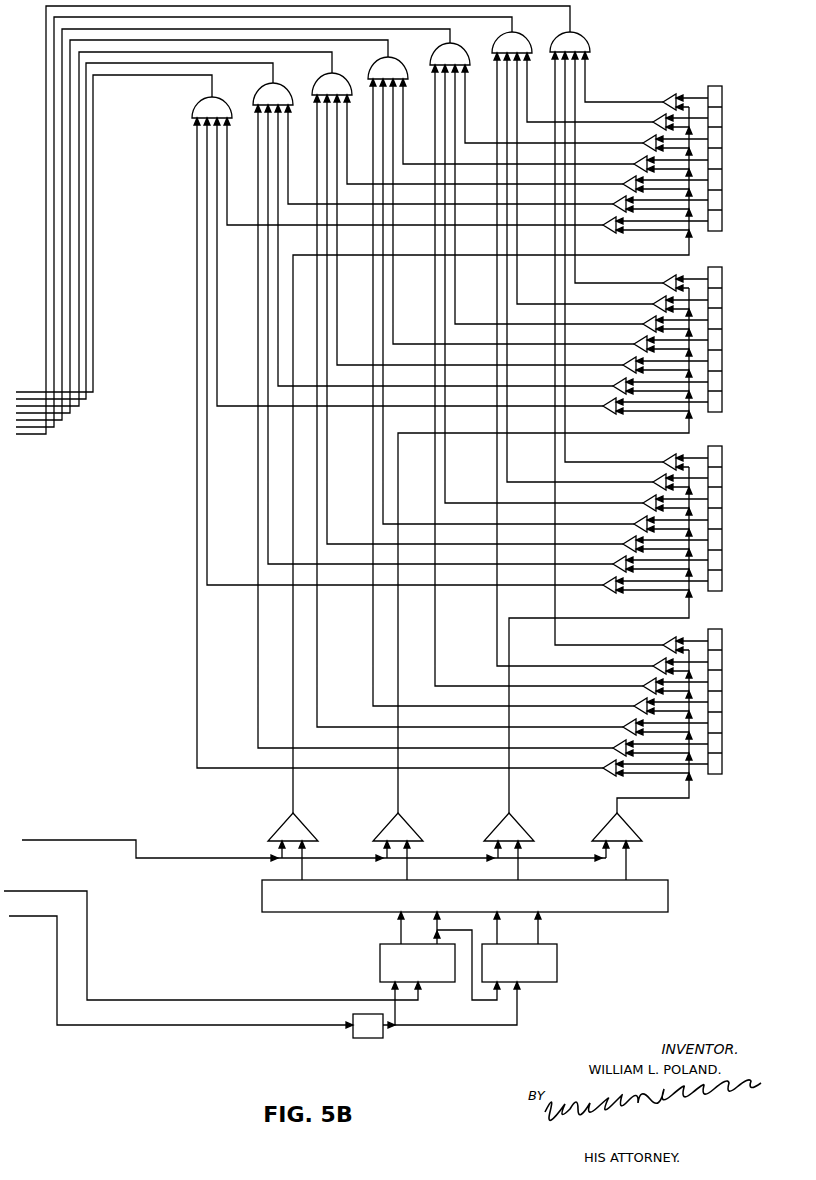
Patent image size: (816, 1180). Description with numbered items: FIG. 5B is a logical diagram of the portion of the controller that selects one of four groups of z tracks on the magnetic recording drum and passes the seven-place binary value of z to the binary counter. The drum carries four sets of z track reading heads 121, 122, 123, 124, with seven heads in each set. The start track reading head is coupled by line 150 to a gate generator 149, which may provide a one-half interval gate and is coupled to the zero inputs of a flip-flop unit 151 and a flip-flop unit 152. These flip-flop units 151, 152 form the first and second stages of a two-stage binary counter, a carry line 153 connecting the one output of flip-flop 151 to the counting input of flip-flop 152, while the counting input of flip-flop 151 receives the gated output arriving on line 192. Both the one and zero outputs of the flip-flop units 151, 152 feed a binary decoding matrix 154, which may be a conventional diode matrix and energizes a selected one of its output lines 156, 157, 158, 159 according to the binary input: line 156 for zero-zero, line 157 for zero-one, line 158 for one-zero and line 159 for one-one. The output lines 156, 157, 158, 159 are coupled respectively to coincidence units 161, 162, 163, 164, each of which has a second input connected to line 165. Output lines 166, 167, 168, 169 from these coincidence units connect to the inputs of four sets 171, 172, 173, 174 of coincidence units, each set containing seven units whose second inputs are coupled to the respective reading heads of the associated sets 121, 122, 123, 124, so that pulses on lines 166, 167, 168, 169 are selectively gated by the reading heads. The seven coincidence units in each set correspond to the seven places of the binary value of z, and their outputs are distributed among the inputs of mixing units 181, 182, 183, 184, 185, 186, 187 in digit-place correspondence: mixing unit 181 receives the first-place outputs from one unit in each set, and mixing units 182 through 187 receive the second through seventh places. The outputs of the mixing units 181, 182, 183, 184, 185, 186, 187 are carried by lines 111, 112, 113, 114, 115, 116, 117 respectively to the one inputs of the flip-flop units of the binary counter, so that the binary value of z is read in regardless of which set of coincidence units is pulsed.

The line 111 is at (93, 125).
The line 112 is at (88, 160).
The line 113 is at (79, 200).
The line 114 is at (70, 225).
The line 115 is at (62, 248).
The line 116 is at (54, 288).
The line 117 is at (46, 322).
The set of z track reading heads 121 is at (722, 106).
The set of z track reading heads 122 is at (722, 280).
The set of z track reading heads 123 is at (722, 458).
The set of z track reading heads 124 is at (722, 641).
The gate generator 149 is at (384, 1037).
The line 150 is at (230, 1026).
The flip-flop unit 151 is at (380, 971).
The flip-flop unit 152 is at (557, 968).
The carry line 153 is at (508, 1001).
The binary decoding matrix 154 is at (583, 913).
The output line 156 is at (306, 868).
The output line 157 is at (410, 868).
The output line 158 is at (521, 868).
The output line 159 is at (628, 871).
The coincidence unit 161 is at (270, 827).
The coincidence unit 162 is at (376, 827).
The coincidence unit 163 is at (487, 827).
The coincidence unit 164 is at (596, 827).
The line 165 is at (240, 859).
The output line 166 is at (294, 808).
The output line 167 is at (399, 806).
The output line 168 is at (510, 806).
The output line 169 is at (642, 801).
The set of coincidence units 171 is at (634, 118).
The set of coincidence units 172 is at (620, 338).
The set of coincidence units 173 is at (611, 517).
The set of coincidence units 174 is at (605, 703).
The mixing unit 181 is at (194, 104).
The mixing unit 182 is at (284, 89).
The mixing unit 183 is at (344, 79).
The mixing unit 184 is at (402, 63).
The mixing unit 185 is at (465, 50).
The mixing unit 186 is at (528, 34).
The mixing unit 187 is at (592, 45).
The line 192 is at (274, 1000).